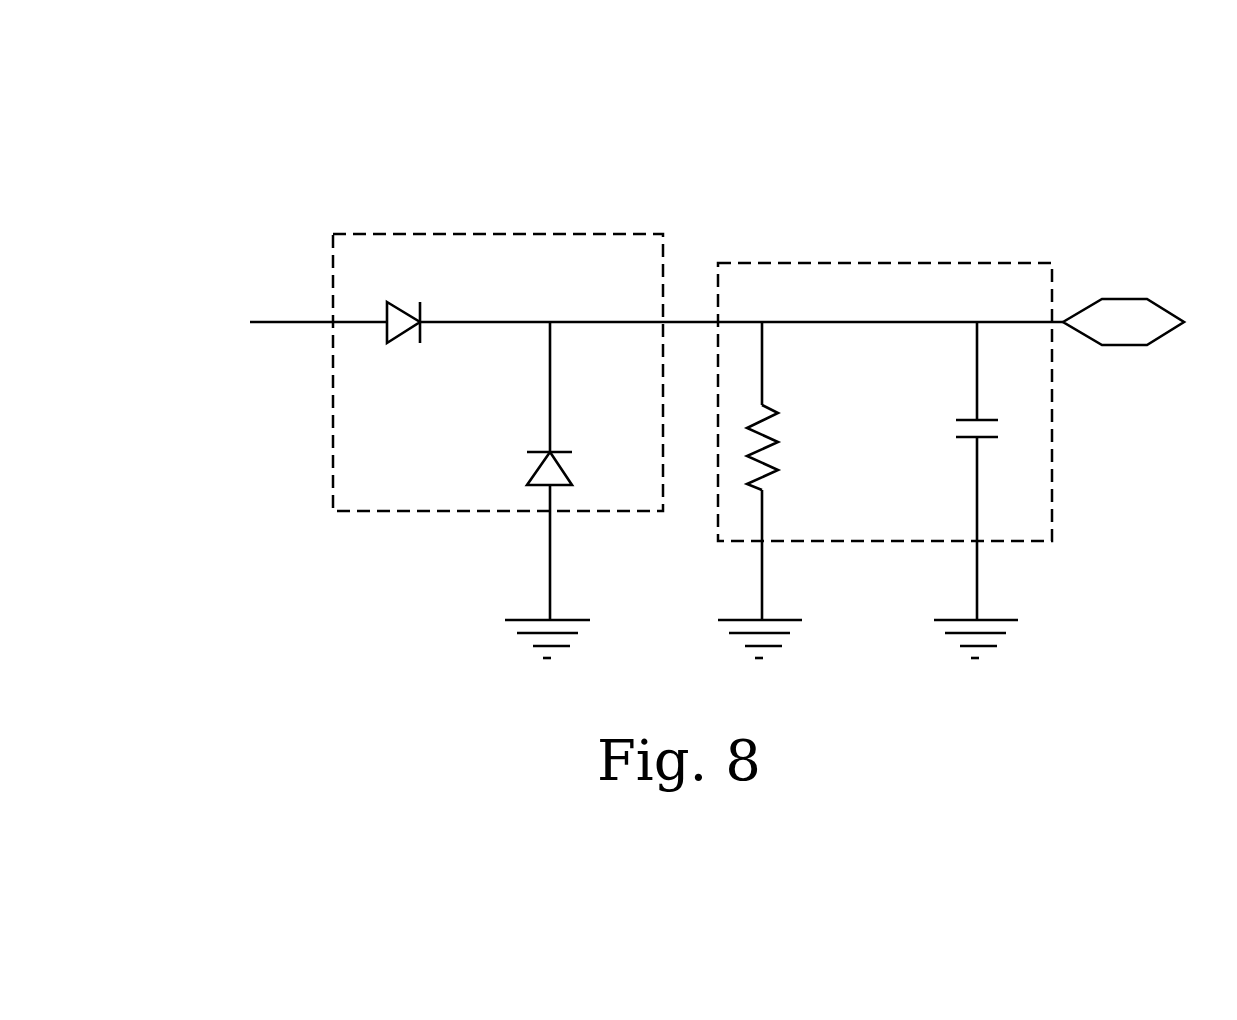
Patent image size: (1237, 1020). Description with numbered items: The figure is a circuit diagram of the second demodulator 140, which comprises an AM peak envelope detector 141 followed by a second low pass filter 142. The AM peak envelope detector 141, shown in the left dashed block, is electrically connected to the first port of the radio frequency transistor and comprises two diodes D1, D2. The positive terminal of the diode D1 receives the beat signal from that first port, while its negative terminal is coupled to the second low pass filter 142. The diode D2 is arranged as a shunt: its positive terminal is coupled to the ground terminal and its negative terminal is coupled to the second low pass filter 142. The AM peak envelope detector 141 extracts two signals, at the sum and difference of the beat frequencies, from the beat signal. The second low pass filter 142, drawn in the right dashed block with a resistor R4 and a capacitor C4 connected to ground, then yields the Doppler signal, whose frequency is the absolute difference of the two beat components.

The second demodulator 140 is at (730, 54).
The AM peak envelope detector 141 is at (360, 233).
The second low pass filter 142 is at (942, 262).
The diode D1 is at (411, 300).
The diode D2 is at (569, 490).
The resistor R4 is at (775, 490).
The capacitor C4 is at (985, 490).